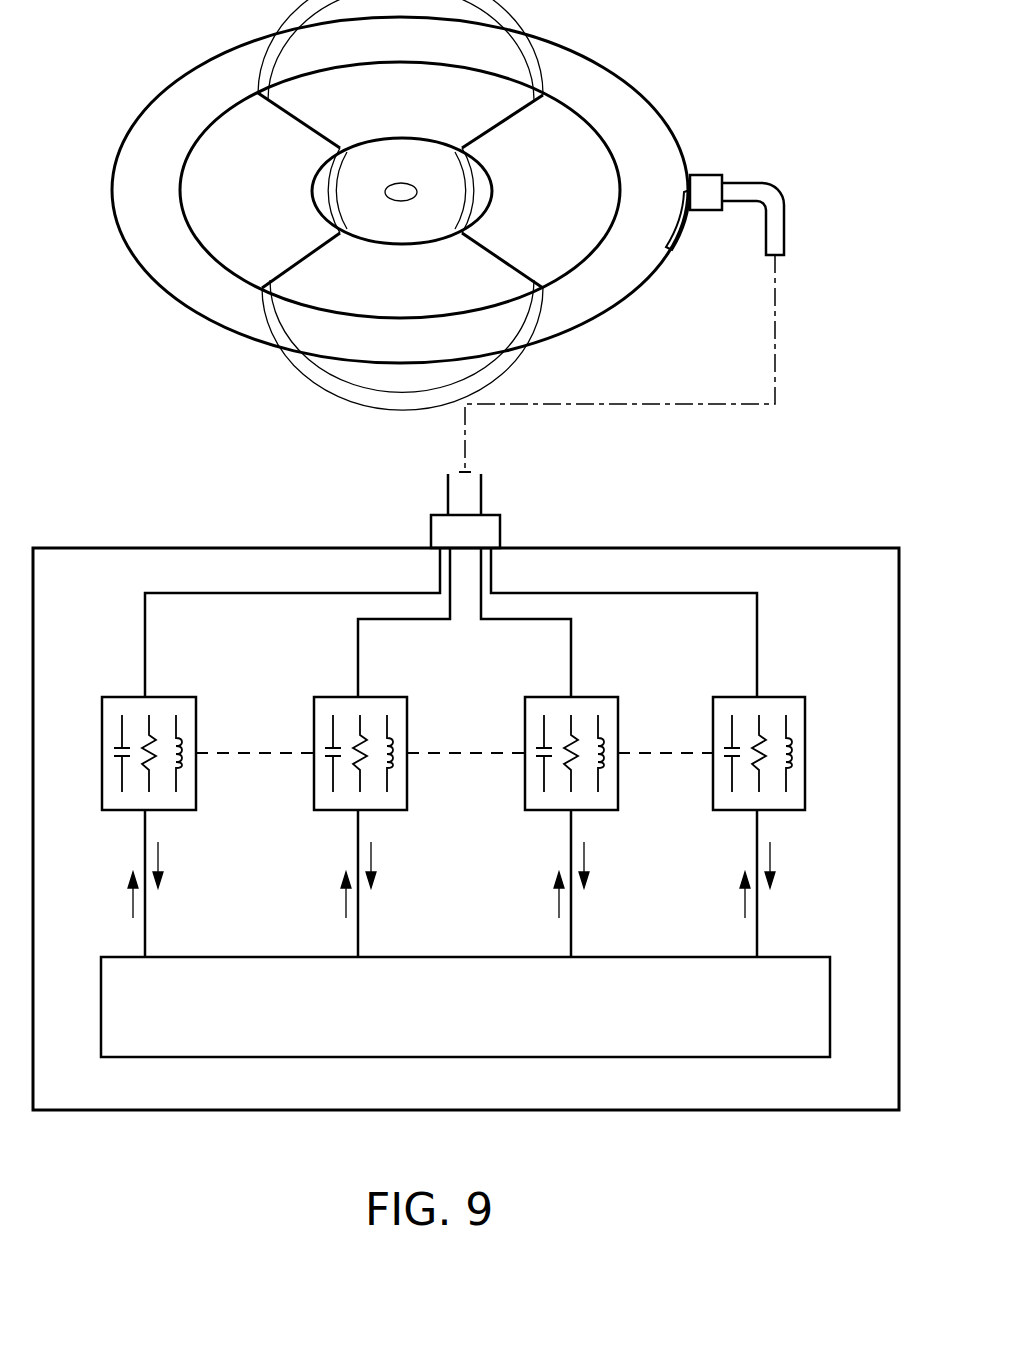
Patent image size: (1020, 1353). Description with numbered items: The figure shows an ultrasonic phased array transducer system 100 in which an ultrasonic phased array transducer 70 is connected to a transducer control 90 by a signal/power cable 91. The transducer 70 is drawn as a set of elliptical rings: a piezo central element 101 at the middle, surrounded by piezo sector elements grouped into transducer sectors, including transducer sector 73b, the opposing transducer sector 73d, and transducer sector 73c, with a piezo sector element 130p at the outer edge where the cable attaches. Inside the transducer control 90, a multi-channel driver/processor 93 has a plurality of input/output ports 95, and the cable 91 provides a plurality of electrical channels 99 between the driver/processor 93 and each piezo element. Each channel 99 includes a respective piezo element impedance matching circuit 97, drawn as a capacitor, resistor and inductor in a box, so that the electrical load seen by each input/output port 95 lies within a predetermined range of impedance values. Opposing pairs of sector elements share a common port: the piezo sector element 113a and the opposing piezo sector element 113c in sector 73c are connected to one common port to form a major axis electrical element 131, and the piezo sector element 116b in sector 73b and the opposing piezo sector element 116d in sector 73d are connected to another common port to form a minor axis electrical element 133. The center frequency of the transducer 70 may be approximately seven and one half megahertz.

The ultrasonic phased array transducer 70 is at (411, 205).
The transducer sector 73b is at (463, 78).
The opposing transducer sector 73c is at (203, 172).
The opposing transducer sector 73d is at (383, 305).
The transducer control 90 is at (90, 547).
The signal/power cable 91 is at (481, 497).
The multi-channel driver/processor 93 is at (262, 1058).
The input/output port 95 is at (145, 955).
The piezo element impedance matching circuit 97 is at (158, 812).
The electrical channel 99 is at (145, 648).
The ultrasonic phased array transducer system 100 is at (650, 1145).
The piezo central element 101 is at (406, 190).
The piezo sector element 113a is at (507, 187).
The opposing piezo sector element 113c is at (298, 183).
The piezo sector element 116b is at (398, 97).
The opposing piezo sector element 116d is at (393, 286).
The piezo sector element 130p is at (677, 240).
The major axis electrical element 131 is at (137, 300).
The minor axis electrical element 133 is at (553, 345).